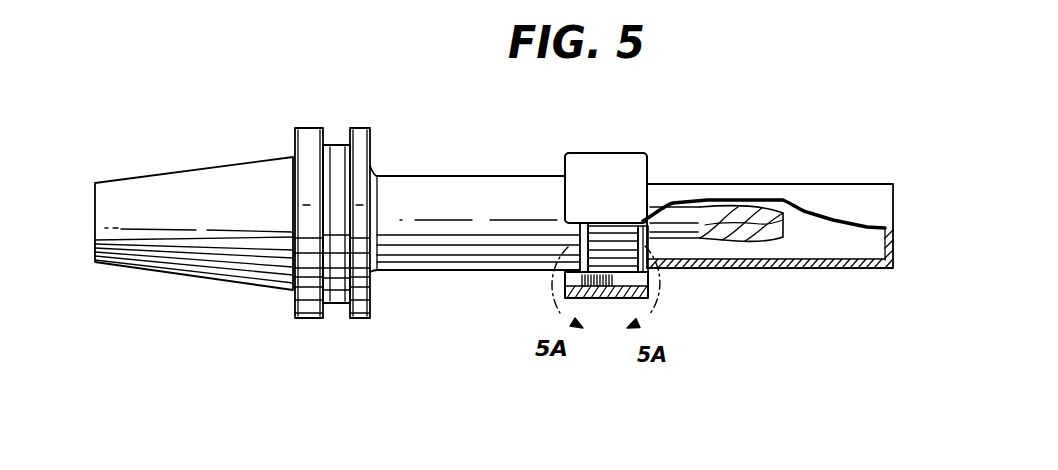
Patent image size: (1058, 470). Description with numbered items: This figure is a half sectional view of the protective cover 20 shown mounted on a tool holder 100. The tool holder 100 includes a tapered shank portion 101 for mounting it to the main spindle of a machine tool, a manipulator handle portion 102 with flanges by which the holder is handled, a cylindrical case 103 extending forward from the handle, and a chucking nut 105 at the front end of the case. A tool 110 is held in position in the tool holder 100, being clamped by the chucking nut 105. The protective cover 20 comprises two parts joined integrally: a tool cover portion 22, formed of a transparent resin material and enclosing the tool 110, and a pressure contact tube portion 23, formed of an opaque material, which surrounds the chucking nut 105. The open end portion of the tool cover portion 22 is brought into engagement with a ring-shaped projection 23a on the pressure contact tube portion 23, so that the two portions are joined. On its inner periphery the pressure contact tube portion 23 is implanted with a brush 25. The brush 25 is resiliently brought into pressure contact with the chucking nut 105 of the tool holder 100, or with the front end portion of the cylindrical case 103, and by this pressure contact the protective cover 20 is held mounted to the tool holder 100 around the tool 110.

The tool holder 100 is at (419, 140).
The tapered shank portion 101 is at (198, 182).
The manipulator handle portion 102 is at (332, 142).
The cylindrical case 103 is at (477, 202).
The pressure contact tube portion 23 is at (622, 160).
The chucking nut 105 is at (608, 248).
The ring-shaped projection 23a is at (665, 248).
The brush 25 is at (560, 280).
The protective cover 20 is at (773, 176).
The tool cover portion 22 is at (808, 268).
The tool 110 is at (692, 217).